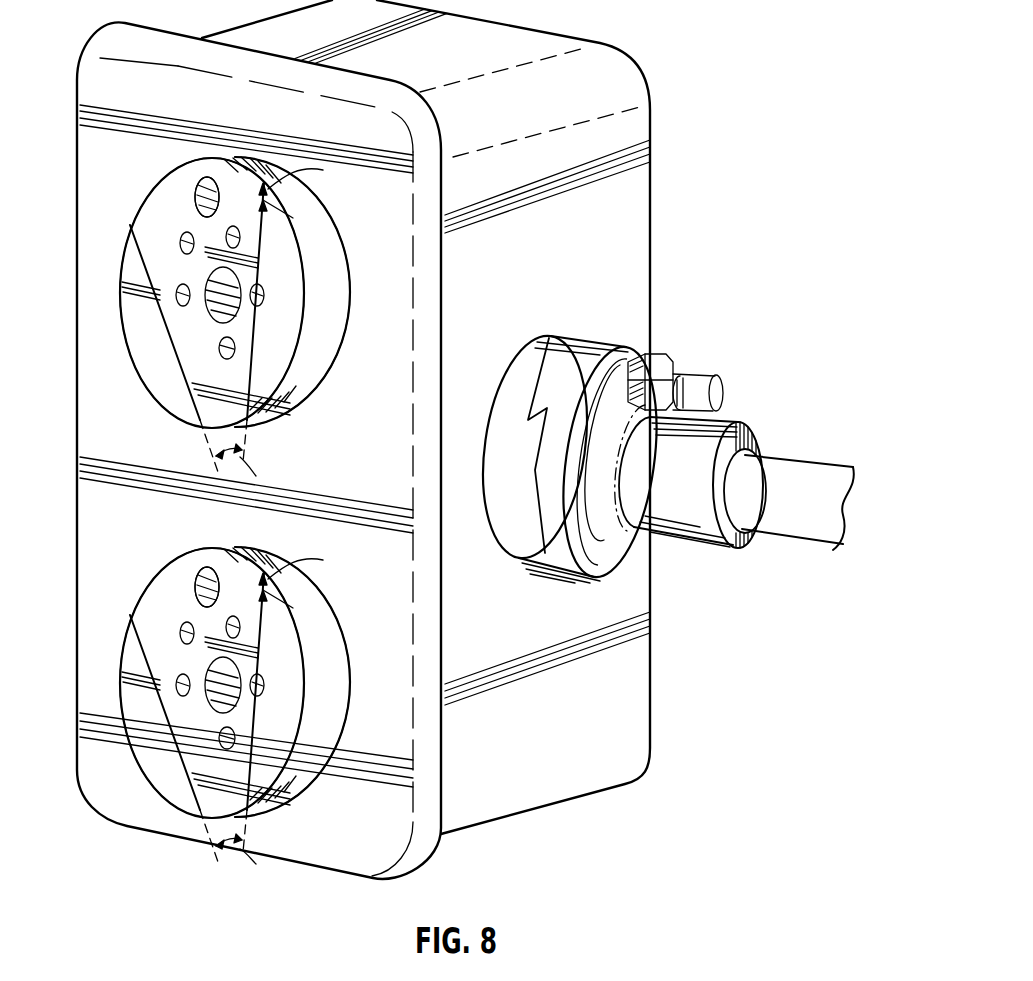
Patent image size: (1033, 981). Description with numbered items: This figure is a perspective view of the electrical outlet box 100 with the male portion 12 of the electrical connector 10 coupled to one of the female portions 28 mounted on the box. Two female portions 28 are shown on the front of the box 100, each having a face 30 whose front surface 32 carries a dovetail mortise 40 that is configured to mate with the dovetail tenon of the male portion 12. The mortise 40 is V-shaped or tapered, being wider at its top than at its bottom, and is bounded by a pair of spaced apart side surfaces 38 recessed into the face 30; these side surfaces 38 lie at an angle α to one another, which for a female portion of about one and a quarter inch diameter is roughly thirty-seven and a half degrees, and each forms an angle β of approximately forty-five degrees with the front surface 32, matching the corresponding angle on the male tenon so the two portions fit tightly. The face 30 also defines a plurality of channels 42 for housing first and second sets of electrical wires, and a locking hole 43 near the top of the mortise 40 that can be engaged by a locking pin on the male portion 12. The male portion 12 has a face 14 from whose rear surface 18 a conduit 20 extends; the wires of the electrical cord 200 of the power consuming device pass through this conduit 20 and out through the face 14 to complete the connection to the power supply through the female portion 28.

The electrical outlet box 100 is at (636, 64).
The female portion 28 is at (273, 518).
The face 30 is at (317, 263).
The dovetail mortise 40 is at (177, 212).
The locking hole 43 is at (199, 189).
The channels 42 is at (180, 243).
The side surfaces 38 is at (138, 267).
The front surface 32 is at (143, 347).
The male portion 12 is at (679, 465).
The electrical connector 10 is at (637, 465).
The face 14 is at (568, 373).
The rear surface 18 is at (617, 557).
The conduit 20 is at (693, 472).
The electrical cord 200 is at (807, 473).